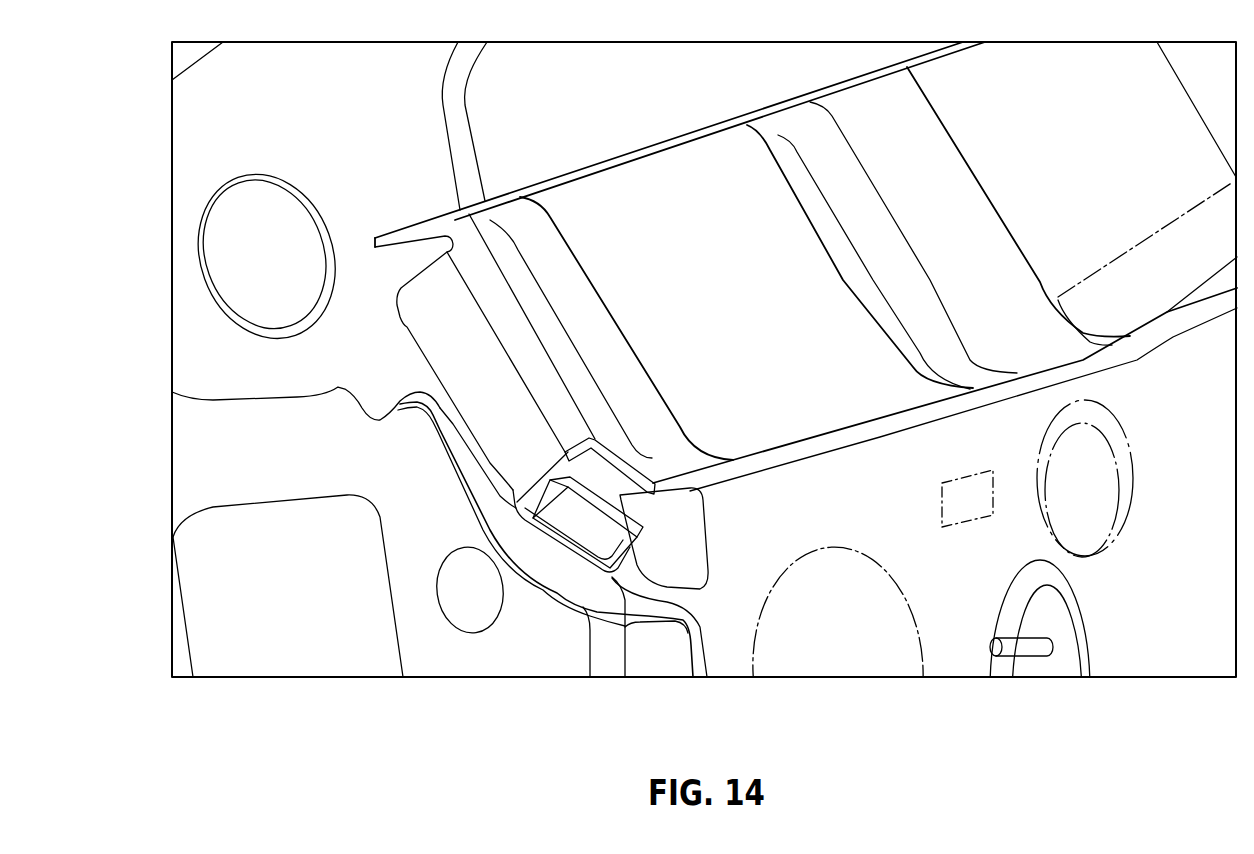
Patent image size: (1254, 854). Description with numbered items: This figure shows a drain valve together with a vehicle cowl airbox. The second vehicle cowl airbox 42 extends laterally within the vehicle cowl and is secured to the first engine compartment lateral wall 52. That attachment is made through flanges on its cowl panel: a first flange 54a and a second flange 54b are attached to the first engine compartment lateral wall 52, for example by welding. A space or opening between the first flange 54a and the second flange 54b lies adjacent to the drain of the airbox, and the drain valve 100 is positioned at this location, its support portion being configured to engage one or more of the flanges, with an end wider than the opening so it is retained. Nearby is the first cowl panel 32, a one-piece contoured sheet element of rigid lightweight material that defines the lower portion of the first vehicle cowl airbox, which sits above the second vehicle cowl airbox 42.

The second vehicle cowl airbox 42 is at (1148, 145).
The first engine compartment lateral wall 52 is at (386, 375).
The first flange 54a is at (442, 327).
The second flange 54b is at (692, 539).
The first cowl panel 32 is at (562, 566).
The mounting block 100 is at (662, 521).